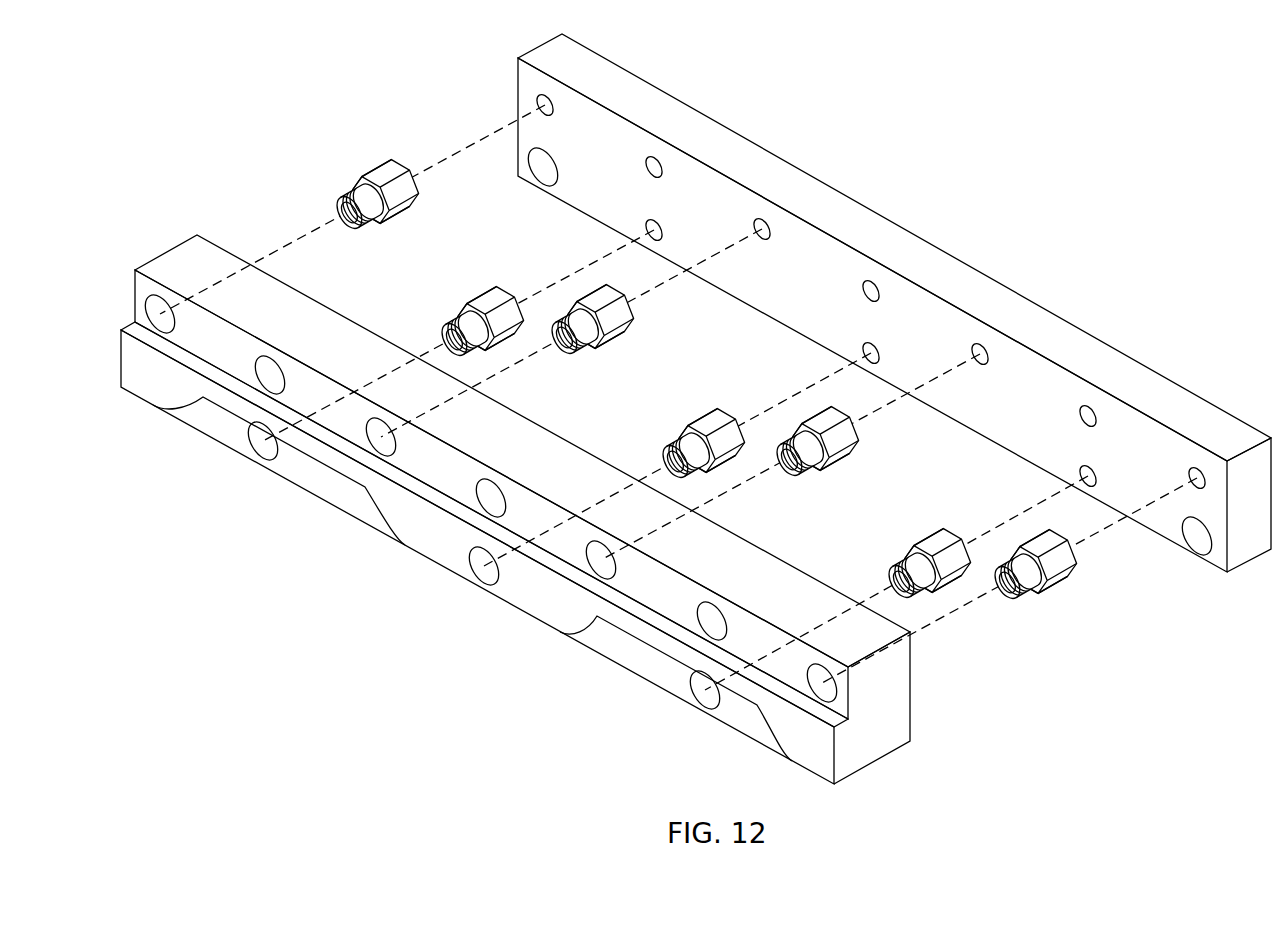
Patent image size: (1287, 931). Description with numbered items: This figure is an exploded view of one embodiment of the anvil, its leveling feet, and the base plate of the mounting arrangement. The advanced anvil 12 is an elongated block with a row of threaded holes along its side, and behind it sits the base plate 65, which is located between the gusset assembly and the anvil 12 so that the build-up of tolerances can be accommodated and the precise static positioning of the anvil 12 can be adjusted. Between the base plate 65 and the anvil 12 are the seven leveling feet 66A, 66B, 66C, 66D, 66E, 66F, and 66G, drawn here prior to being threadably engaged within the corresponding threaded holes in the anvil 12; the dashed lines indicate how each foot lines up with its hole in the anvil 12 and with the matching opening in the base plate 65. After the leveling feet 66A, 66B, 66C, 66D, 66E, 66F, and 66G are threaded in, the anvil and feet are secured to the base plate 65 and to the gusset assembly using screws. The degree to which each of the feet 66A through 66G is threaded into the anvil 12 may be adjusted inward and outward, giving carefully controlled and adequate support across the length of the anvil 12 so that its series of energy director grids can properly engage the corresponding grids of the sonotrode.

The anvil 12 is at (877, 733).
The base plate 65 is at (1238, 535).
The leveling foot 66A is at (506, 327).
The leveling foot 66B is at (402, 200).
The leveling foot 66C is at (616, 325).
The leveling foot 66D is at (727, 450).
The leveling foot 66E is at (840, 447).
The leveling foot 66F is at (952, 572).
The leveling foot 66G is at (1058, 572).